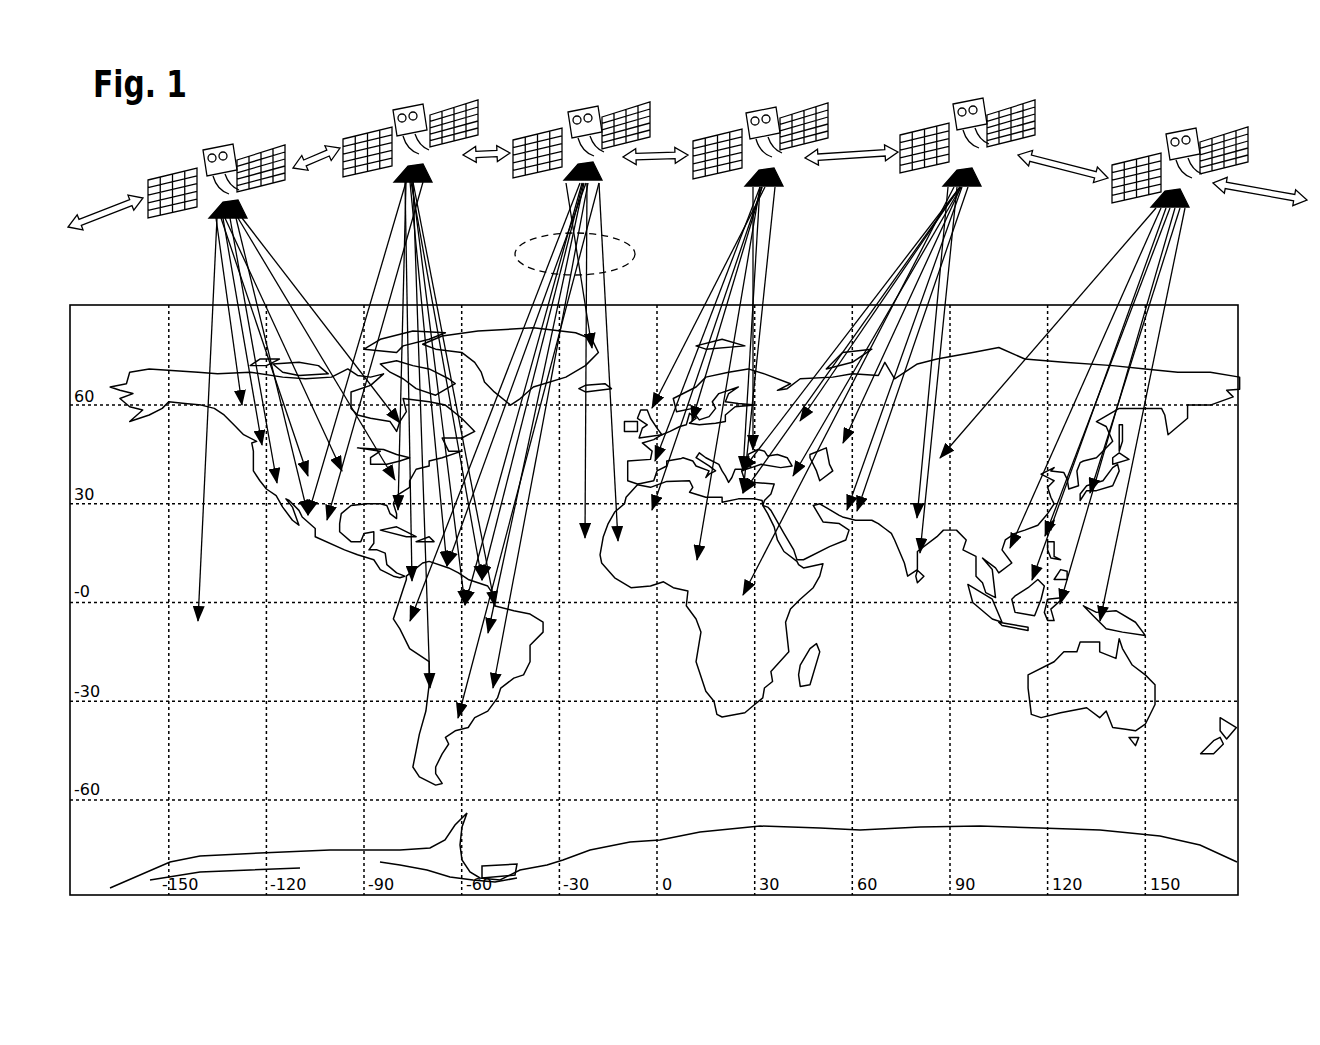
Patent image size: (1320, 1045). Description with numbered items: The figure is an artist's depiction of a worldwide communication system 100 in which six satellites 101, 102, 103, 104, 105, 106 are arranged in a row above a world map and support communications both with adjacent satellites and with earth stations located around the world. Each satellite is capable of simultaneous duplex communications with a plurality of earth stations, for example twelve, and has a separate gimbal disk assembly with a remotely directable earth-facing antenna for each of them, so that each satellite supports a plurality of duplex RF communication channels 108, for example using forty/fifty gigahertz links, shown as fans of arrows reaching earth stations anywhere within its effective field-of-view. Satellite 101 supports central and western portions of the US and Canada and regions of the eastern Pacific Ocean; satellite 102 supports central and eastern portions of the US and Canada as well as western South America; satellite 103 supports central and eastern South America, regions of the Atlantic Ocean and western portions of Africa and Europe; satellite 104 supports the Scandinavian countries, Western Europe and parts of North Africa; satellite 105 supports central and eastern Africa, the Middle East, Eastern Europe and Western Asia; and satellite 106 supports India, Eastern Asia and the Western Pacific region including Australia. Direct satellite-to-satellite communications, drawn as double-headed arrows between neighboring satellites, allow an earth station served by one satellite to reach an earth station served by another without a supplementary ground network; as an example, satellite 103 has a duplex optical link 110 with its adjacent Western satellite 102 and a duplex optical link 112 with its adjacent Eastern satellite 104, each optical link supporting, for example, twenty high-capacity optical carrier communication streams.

The worldwide communication system 100 is at (305, 120).
The satellite 101 is at (176, 218).
The satellite 102 is at (365, 182).
The satellite 103 is at (537, 175).
The satellite 104 is at (710, 179).
The satellite 105 is at (917, 175).
The satellite 106 is at (1122, 207).
The duplex RF communication channels 108 is at (640, 262).
The duplex optical link 110 is at (492, 165).
The duplex optical link 112 is at (658, 163).